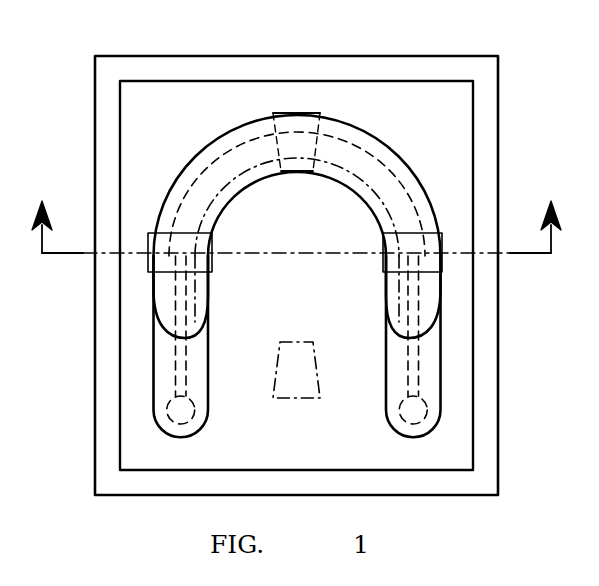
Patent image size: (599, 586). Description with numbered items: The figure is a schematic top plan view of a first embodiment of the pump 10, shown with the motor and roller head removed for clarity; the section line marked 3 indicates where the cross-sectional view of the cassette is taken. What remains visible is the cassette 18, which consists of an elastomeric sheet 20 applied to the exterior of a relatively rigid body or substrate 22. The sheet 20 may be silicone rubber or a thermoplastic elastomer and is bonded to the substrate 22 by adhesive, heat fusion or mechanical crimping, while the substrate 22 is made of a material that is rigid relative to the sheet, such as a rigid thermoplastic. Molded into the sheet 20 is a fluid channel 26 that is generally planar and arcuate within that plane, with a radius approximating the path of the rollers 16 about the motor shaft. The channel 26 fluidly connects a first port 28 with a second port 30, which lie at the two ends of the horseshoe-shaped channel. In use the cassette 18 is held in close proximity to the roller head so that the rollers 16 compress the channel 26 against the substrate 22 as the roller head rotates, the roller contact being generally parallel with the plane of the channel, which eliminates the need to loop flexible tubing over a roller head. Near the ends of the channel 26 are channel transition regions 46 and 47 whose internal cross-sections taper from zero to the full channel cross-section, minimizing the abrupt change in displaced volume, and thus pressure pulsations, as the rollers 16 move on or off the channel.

The pump 10 is at (84, 312).
The rollers 16 is at (148, 265).
The cassette 18 is at (232, 50).
The elastomeric sheet 20 is at (473, 100).
The substrate 22 is at (498, 135).
The fluid channel 26 is at (198, 162).
The port 28 is at (165, 410).
The port 30 is at (420, 433).
The channel transition region 46 is at (154, 321).
The channel transition region 47 is at (432, 315).
The section line 3- 3 is at (296, 210).